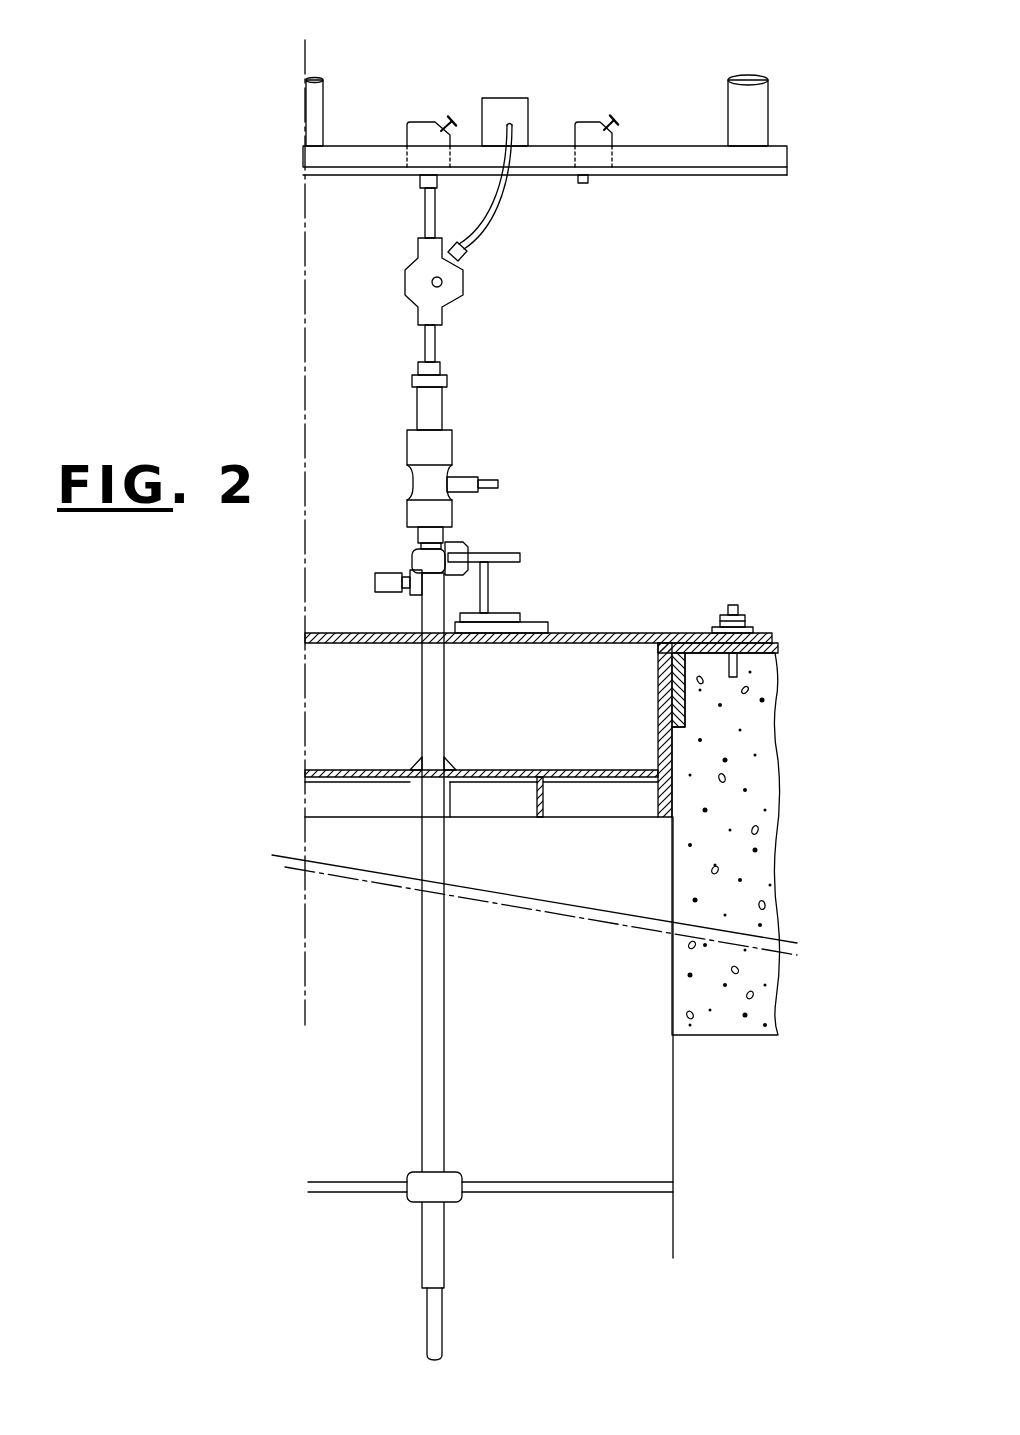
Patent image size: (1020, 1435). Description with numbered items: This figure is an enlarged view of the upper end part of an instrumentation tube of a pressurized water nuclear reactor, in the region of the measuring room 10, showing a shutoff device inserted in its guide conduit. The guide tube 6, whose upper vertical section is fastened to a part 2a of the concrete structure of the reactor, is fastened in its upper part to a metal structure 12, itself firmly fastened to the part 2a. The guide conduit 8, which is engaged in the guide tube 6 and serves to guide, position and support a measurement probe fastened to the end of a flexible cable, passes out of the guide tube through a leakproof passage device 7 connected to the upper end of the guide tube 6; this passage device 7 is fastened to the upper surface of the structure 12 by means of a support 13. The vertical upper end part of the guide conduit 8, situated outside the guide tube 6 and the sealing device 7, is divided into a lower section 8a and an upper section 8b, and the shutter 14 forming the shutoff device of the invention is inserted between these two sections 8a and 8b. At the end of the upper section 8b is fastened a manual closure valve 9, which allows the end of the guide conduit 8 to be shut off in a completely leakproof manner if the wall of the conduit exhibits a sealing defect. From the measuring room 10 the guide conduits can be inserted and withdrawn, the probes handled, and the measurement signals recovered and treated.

The measuring room 10 is at (545, 105).
The manual closure valve 9 is at (420, 128).
The upper section 8b is at (425, 213).
The shutter 14 is at (468, 282).
The lower section 8a is at (425, 337).
The guide conduit 8 is at (442, 352).
The passage device 7 is at (455, 450).
The support 13 is at (490, 595).
The guide tube 6 is at (444, 1003).
The metal structure 12 is at (487, 782).
The part of the concrete structure 2a is at (765, 720).